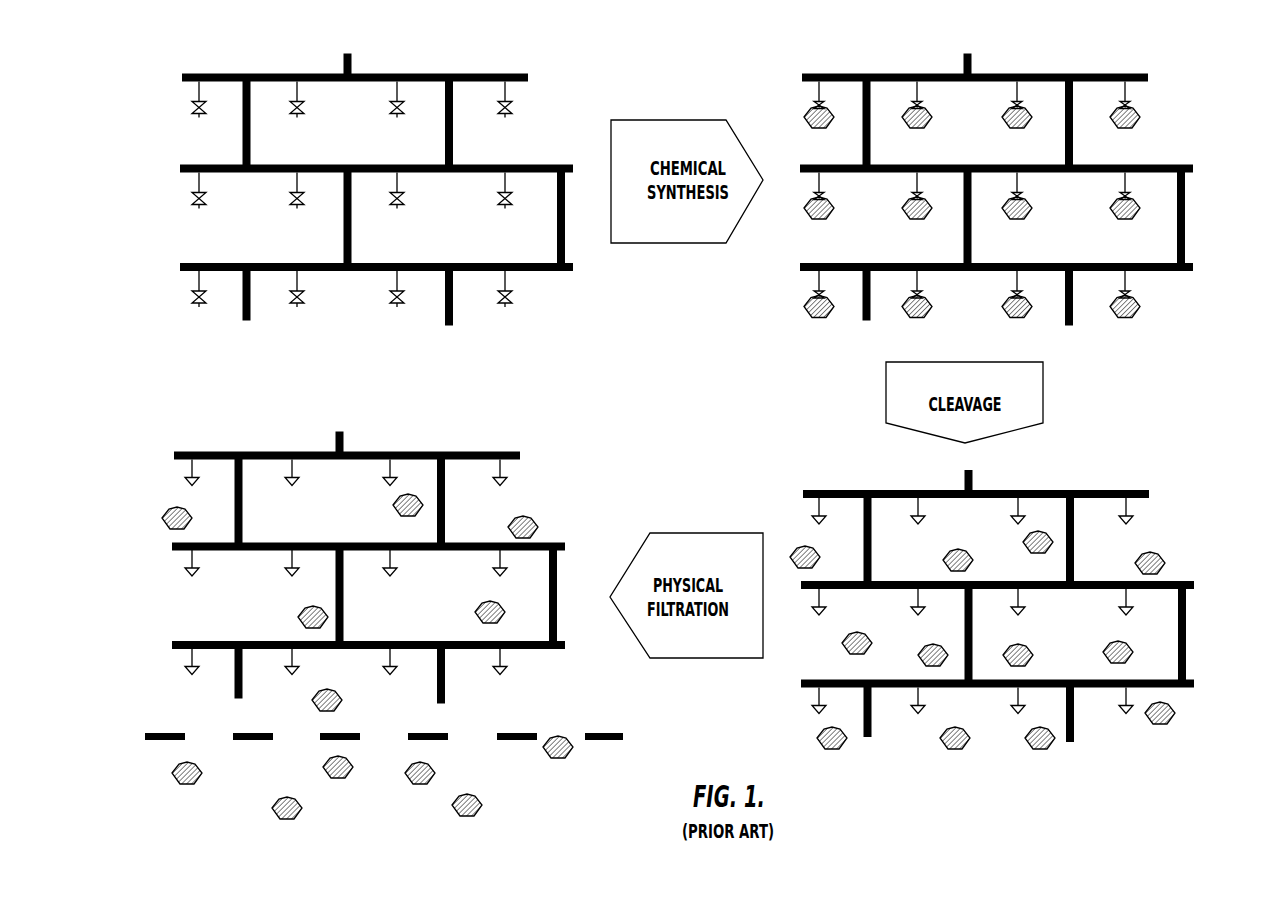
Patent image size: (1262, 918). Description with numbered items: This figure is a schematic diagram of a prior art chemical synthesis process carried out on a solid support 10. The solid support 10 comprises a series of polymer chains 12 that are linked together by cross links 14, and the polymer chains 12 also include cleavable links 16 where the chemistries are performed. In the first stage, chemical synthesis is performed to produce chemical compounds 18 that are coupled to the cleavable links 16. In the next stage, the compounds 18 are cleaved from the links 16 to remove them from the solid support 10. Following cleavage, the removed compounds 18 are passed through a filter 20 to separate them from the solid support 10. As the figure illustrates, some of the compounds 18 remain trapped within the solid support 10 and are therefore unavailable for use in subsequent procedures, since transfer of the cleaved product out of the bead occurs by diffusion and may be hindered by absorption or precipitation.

The solid support 10 is at (551, 93).
The polymer chains 12 is at (430, 73).
The cross links 14 is at (252, 93).
The cleavable links 16 is at (505, 118).
The chemical compounds 18 is at (824, 129).
The filter 20 is at (520, 741).